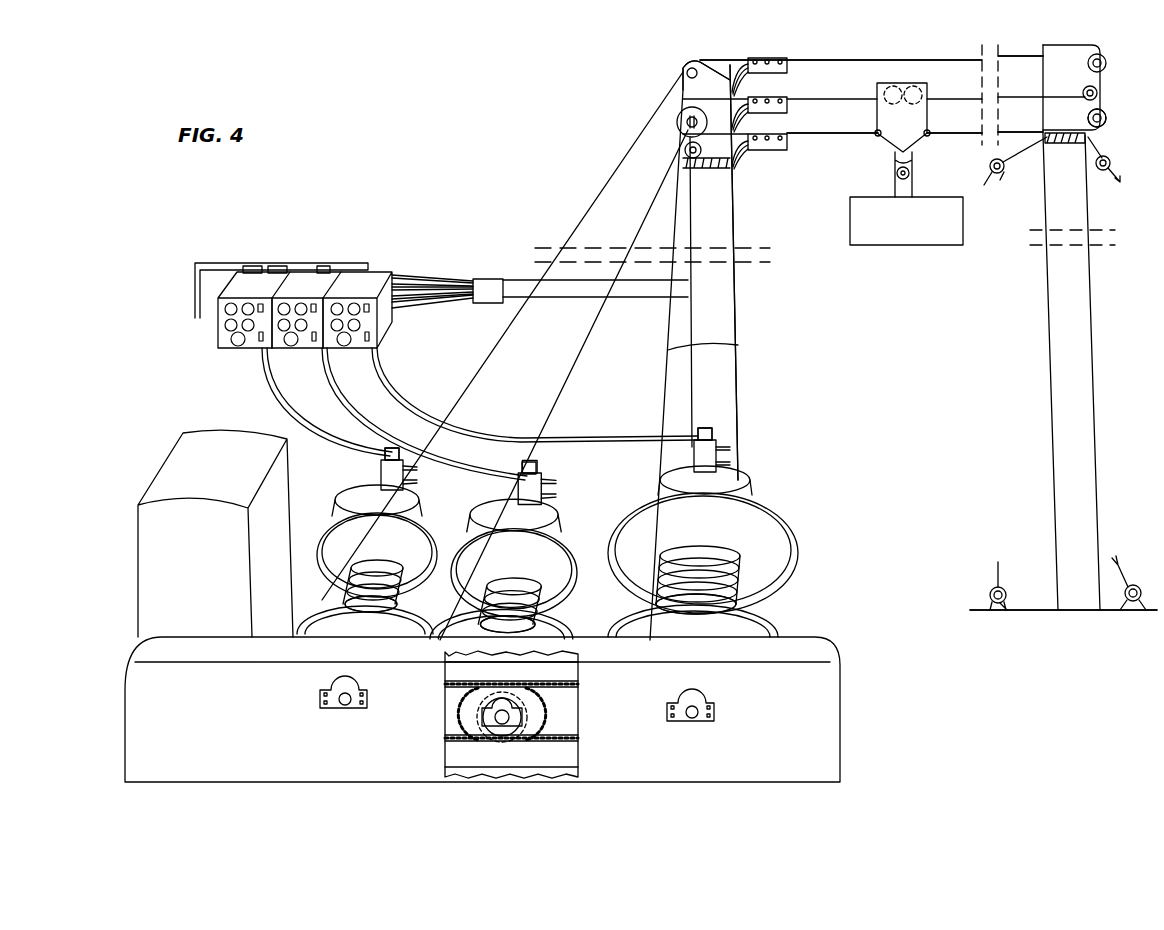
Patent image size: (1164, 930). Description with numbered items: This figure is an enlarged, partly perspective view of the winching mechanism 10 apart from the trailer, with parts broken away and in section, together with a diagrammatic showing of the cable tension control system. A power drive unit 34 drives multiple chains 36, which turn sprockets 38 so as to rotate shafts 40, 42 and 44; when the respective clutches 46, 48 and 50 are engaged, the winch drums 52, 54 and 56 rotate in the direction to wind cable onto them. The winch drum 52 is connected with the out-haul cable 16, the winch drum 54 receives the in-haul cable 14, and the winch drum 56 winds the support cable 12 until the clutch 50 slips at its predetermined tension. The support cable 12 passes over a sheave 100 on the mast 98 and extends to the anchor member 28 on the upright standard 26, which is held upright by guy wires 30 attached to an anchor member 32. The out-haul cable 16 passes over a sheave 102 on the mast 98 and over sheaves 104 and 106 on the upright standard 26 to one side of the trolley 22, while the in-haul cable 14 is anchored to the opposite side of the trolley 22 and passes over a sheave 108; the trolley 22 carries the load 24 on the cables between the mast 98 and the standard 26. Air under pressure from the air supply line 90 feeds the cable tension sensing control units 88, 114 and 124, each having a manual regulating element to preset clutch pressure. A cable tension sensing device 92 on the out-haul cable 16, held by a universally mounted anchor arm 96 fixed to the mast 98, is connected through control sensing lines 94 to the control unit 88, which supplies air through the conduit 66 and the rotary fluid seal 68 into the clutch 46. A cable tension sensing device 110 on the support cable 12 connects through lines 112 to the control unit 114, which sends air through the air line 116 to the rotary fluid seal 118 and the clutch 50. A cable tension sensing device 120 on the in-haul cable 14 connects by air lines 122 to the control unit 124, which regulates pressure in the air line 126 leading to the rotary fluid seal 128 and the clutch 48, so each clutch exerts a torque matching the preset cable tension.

The winching mechanism 10 is at (768, 500).
The support cable 12 is at (735, 338).
The in-haul cable 14 is at (598, 318).
The out-haul cable 16 is at (605, 182).
The trolley 22 is at (882, 110).
The load 24 is at (898, 232).
The upright standard 26 is at (1052, 405).
The anchor member 28 is at (1083, 95).
The guy wires 30 is at (1026, 160).
The anchor member 32 is at (1000, 608).
The power drive unit 34 is at (172, 480).
The chains 36 is at (518, 742).
The sprockets 38 is at (478, 694).
The shaft 40 is at (340, 702).
The shaft 42 is at (452, 742).
The shaft 44 is at (696, 716).
The clutch 46 is at (362, 482).
The clutch 48 is at (548, 515).
The clutch 50 is at (745, 478).
The winch drum 52 is at (400, 590).
The winch drum 54 is at (548, 600).
The winch drum 56 is at (735, 592).
The conduit 66 is at (295, 392).
The rotary fluid seal 68 is at (392, 447).
The cable tension sensing control unit 88 is at (245, 283).
The air supply line 90 is at (195, 300).
The cable tension sensing device 92 is at (760, 58).
The control sensing lines 94 is at (408, 284).
The anchor arm 96 is at (726, 60).
The mast 98 is at (735, 300).
The sheave 100 is at (678, 128).
The sheave 102 is at (684, 70).
The sheave 104 is at (1087, 62).
The sheave 106 is at (1106, 126).
The sheave 108 is at (700, 155).
The cable tension sensing device 110 is at (788, 98).
The lines 112 is at (430, 286).
The cable tension sensing control unit 114 is at (370, 280).
The air line 116 is at (462, 432).
The rotary fluid seal 118 is at (712, 430).
The cable tension sensing device 120 is at (782, 146).
The air lines 122 is at (415, 300).
The cable tension sensing control unit 124 is at (292, 278).
The air line 126 is at (362, 398).
The rotary fluid seal 128 is at (538, 466).